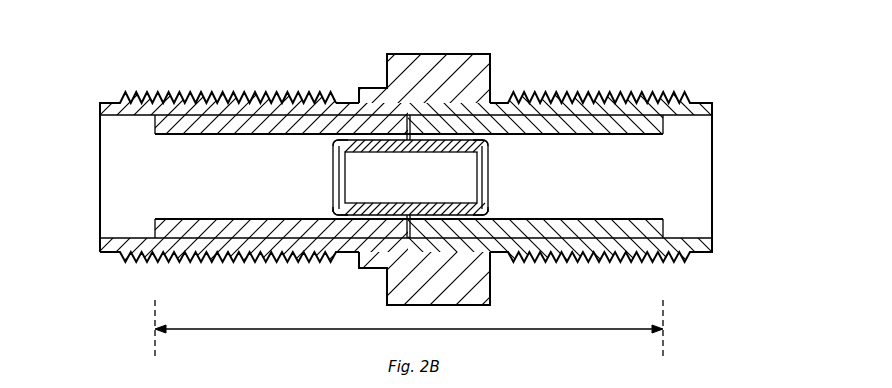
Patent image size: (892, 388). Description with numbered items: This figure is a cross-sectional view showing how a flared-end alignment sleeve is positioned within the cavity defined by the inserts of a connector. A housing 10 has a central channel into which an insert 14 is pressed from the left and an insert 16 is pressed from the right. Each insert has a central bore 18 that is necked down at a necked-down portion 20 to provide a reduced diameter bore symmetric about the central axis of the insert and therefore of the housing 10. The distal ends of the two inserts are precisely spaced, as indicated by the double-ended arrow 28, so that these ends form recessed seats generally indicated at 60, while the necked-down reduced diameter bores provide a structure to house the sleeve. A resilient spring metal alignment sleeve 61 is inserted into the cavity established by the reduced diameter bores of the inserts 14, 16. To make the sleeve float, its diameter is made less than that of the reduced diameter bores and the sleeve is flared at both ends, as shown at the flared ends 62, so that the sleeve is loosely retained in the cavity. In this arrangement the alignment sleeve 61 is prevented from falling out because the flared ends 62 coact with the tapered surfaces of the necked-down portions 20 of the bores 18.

The housing 10 is at (499, 48).
The insert 14 is at (243, 117).
The insert 16 is at (616, 114).
The central bore 18 is at (208, 189).
The necked-down portion 20 is at (356, 102).
The double-ended arrow 28 is at (513, 328).
The recessed seats 60 is at (128, 195).
The alignment sleeve 61 is at (468, 180).
The flared ends 62 is at (333, 146).